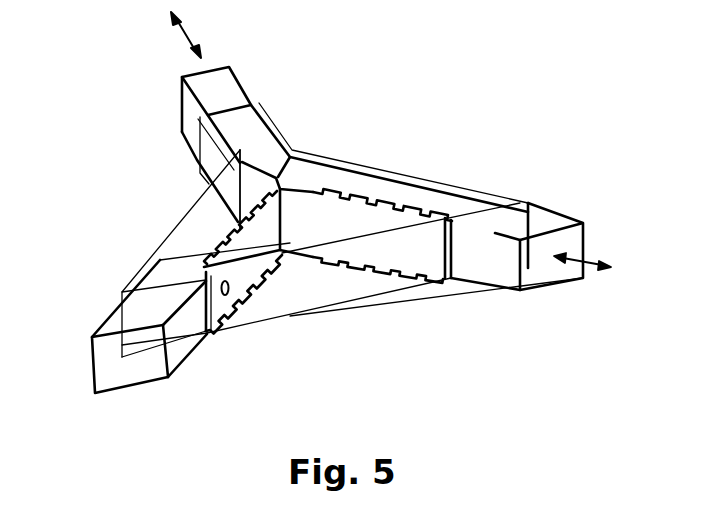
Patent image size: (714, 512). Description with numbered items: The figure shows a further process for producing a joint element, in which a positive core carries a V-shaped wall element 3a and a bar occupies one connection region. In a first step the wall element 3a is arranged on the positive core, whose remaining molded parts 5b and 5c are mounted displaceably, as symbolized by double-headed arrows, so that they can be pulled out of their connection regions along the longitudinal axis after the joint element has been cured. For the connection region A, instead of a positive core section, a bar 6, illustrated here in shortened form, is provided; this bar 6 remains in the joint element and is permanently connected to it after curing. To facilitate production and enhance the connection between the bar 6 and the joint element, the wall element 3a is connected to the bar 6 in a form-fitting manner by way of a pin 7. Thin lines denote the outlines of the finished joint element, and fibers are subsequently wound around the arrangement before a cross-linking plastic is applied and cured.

The molded part of the positive core 5c is at (218, 87).
The molded part of the positive core 5b is at (552, 222).
The connection region A is at (115, 290).
The bar 6 is at (103, 368).
The pin 7 is at (229, 293).
The V-shaped wall element 3a is at (420, 270).